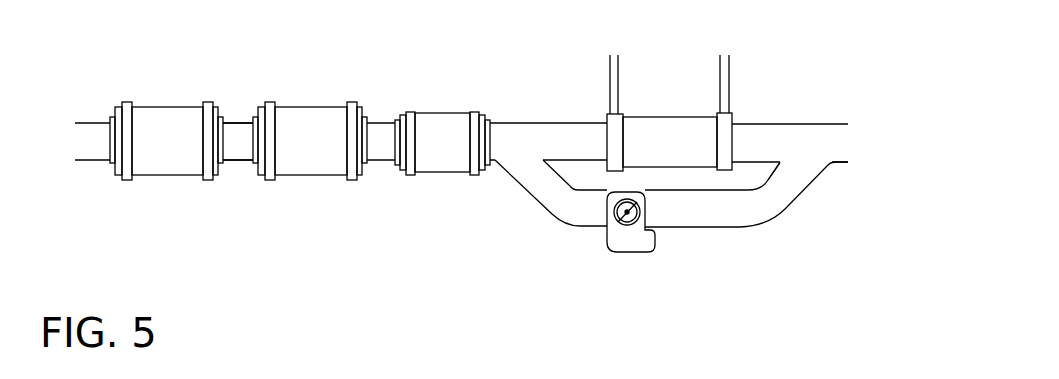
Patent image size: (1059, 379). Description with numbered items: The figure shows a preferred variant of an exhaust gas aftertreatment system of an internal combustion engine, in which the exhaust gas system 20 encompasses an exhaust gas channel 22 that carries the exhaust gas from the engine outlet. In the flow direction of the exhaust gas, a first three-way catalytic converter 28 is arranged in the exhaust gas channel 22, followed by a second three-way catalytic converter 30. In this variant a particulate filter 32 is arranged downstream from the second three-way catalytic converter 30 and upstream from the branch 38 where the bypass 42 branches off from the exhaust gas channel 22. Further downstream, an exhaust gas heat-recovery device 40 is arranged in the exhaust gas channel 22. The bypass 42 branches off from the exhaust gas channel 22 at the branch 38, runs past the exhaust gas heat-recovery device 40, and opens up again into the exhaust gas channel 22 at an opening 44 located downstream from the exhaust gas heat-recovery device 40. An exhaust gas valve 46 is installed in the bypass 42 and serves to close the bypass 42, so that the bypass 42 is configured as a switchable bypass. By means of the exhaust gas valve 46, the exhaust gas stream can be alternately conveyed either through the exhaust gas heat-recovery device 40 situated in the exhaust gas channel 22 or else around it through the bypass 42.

The exhaust gas system 20 is at (812, 98).
The exhaust gas channel 22 is at (237, 150).
The first three-way catalytic converter 28 is at (164, 107).
The second three-way catalytic converter 30 is at (307, 108).
The particulate filter 32 is at (435, 117).
The branch 38 is at (524, 160).
The exhaust gas heat-recovery device 40 is at (671, 118).
The bypass 42 is at (723, 212).
The opening 44 is at (803, 160).
The exhaust gas valve 46 is at (621, 240).